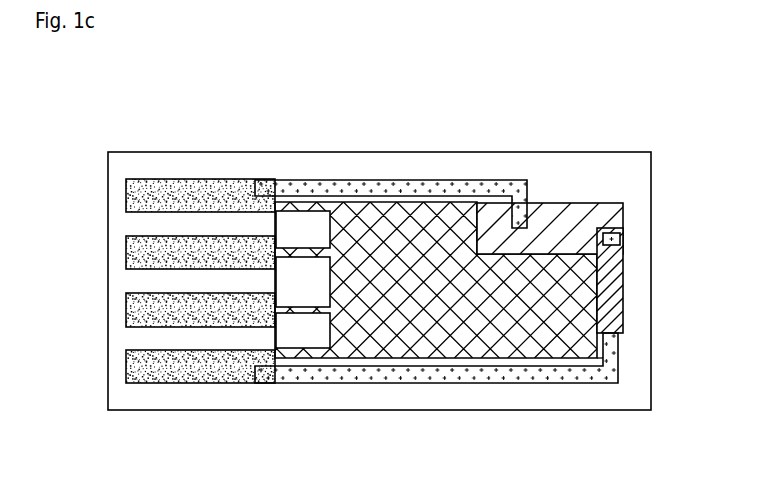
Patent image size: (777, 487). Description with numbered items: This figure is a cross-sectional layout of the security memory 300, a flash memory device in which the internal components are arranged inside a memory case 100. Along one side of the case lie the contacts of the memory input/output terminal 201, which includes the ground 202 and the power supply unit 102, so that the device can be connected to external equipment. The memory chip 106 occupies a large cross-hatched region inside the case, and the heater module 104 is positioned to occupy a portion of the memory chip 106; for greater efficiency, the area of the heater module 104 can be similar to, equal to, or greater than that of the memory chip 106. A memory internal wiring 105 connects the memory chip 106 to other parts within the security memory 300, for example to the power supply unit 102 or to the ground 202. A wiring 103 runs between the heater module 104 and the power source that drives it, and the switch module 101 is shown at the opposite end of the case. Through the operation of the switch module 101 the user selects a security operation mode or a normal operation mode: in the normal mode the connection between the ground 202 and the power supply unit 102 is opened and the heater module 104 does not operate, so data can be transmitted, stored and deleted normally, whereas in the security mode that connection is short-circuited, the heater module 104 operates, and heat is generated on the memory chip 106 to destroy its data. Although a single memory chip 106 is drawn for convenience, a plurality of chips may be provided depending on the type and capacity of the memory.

The security memory 300 is at (110, 112).
The memory case 100 is at (574, 170).
The memory input/output terminal 201 is at (159, 285).
The ground 202 is at (210, 190).
The power supply unit 102 is at (200, 406).
The wiring 103 is at (437, 183).
The heater module 104 is at (617, 212).
The switch module 101 is at (620, 302).
The memory internal wiring 105 is at (282, 212).
The memory chip 106 is at (567, 348).